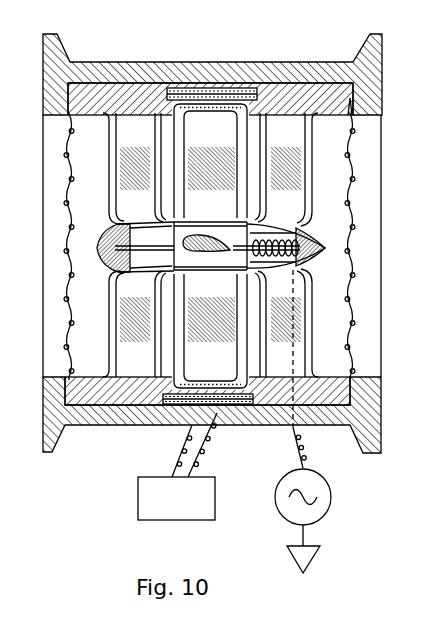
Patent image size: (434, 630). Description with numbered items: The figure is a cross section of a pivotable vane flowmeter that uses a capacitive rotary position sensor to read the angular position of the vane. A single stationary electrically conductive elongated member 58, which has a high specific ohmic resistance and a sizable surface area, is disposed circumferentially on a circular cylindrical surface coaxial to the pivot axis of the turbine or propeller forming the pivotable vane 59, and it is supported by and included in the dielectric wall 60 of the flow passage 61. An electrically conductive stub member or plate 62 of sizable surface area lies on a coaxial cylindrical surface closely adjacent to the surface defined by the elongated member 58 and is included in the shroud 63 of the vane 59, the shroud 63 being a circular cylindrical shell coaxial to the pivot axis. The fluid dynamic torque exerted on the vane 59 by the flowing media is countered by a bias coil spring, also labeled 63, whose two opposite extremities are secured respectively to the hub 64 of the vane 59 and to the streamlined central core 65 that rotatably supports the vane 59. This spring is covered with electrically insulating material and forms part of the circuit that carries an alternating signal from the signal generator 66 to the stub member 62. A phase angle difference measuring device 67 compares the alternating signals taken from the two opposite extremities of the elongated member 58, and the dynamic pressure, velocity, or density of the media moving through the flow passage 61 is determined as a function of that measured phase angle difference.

The stationary electrically conductive elongated member 58 is at (229, 61).
The pivotable vane 59 is at (207, 140).
The dielectric wall 60 is at (294, 98).
The flow passage 61 is at (210, 377).
The electrically conductive stub member 62 is at (197, 122).
The shroud 63 is at (265, 233).
The hub 64 is at (222, 233).
The streamlined central core 65 is at (293, 270).
The signal generator 66 is at (333, 497).
The phase angle difference measuring device 67 is at (138, 492).